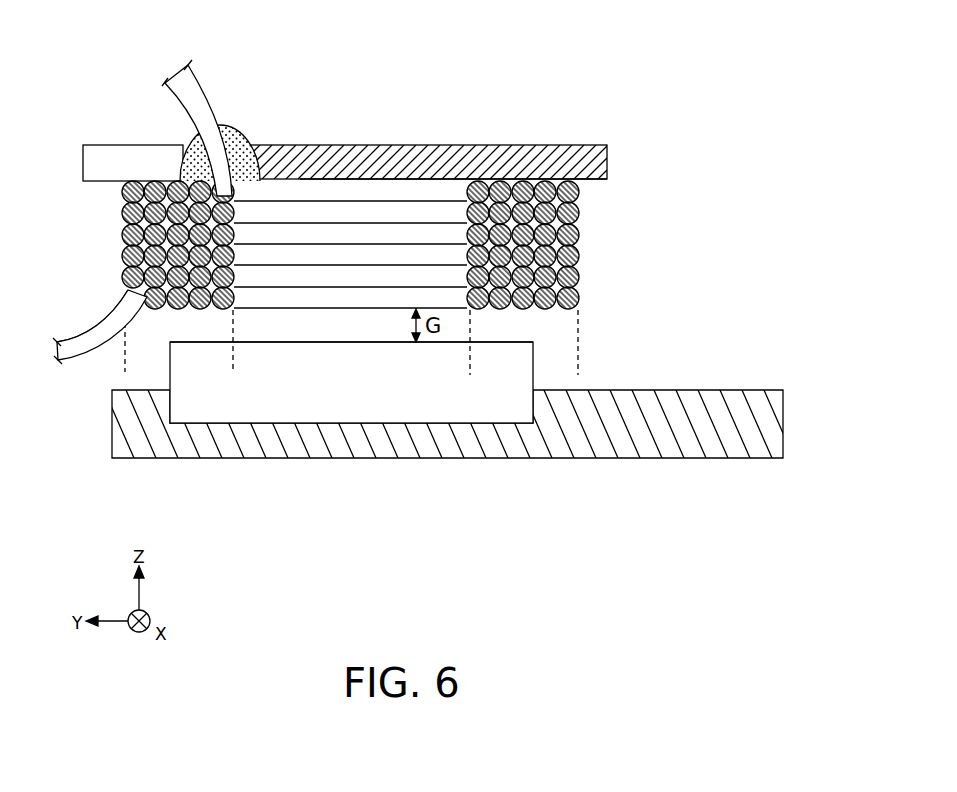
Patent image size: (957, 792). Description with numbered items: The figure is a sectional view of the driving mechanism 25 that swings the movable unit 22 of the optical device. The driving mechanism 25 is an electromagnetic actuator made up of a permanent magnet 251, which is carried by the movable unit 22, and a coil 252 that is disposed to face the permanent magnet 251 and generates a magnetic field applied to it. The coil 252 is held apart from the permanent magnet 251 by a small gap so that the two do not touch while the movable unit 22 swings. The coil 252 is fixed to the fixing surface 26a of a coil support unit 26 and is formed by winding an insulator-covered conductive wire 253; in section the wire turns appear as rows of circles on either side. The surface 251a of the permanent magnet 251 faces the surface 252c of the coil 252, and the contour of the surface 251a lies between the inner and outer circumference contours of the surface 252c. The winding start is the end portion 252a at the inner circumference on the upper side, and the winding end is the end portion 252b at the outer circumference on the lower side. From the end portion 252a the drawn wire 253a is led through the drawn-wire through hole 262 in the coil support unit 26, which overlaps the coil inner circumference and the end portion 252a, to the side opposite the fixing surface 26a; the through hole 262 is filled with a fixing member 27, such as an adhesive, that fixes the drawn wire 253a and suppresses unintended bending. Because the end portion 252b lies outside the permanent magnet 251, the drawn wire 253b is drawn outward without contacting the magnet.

The movable unit 22 is at (687, 440).
The driving mechanism 25 is at (361, 309).
The coil support unit 26 is at (500, 160).
The fixing surface 26a is at (401, 178).
The fixing member 27 is at (243, 130).
The permanent magnet 251 is at (375, 393).
The surface of the permanent magnet 251a is at (376, 343).
The coil 252 is at (579, 228).
The end portion 252a is at (235, 193).
The end portion 252b is at (135, 298).
The surface of the coil 252c is at (300, 310).
The conductive wire 253 is at (122, 213).
The drawn wire 253a is at (190, 82).
The drawn wire 253b is at (72, 350).
The drawn-wire through hole 262 is at (110, 160).